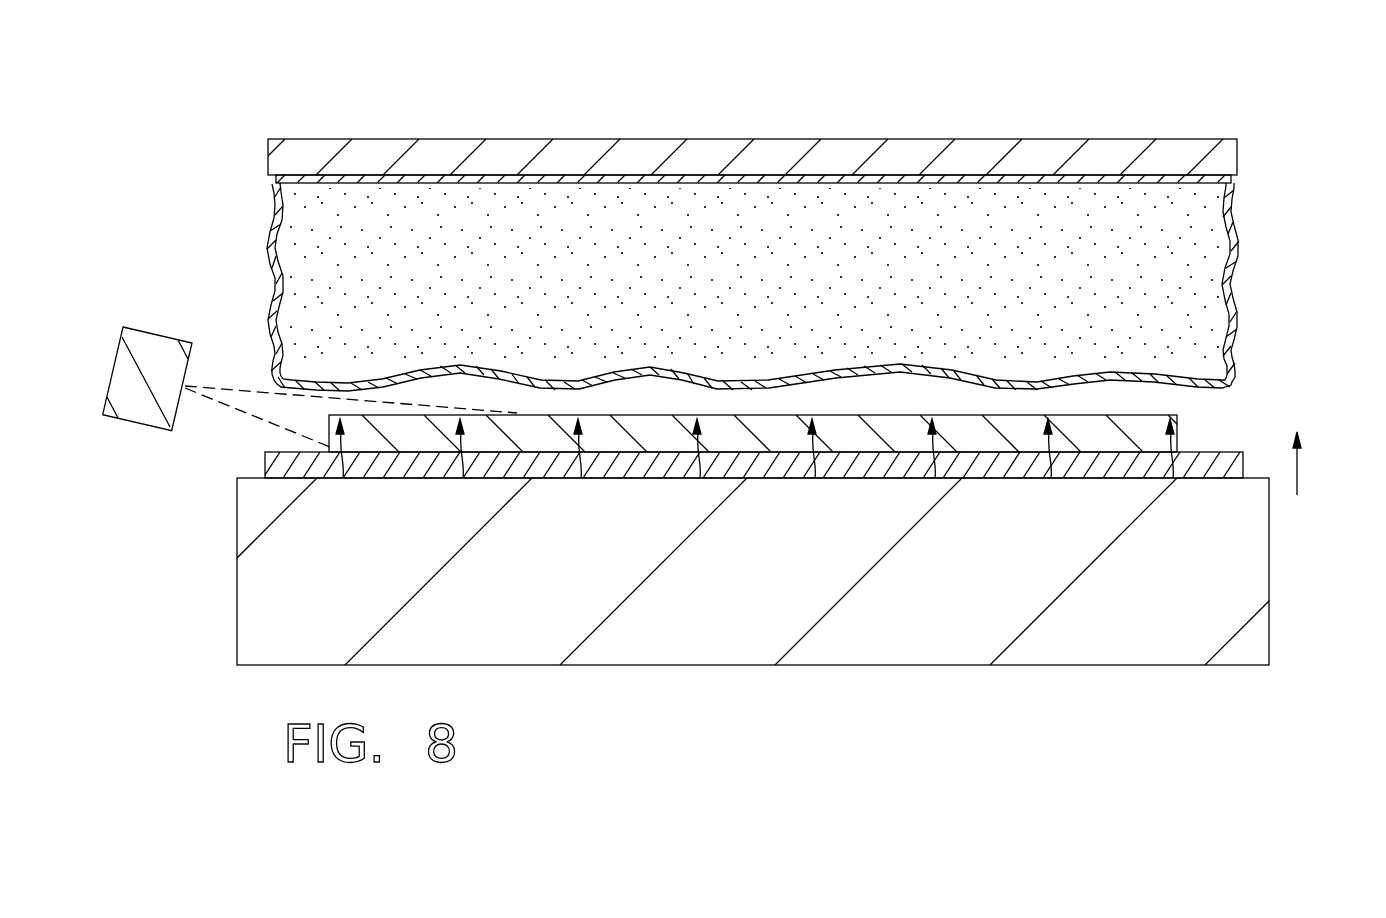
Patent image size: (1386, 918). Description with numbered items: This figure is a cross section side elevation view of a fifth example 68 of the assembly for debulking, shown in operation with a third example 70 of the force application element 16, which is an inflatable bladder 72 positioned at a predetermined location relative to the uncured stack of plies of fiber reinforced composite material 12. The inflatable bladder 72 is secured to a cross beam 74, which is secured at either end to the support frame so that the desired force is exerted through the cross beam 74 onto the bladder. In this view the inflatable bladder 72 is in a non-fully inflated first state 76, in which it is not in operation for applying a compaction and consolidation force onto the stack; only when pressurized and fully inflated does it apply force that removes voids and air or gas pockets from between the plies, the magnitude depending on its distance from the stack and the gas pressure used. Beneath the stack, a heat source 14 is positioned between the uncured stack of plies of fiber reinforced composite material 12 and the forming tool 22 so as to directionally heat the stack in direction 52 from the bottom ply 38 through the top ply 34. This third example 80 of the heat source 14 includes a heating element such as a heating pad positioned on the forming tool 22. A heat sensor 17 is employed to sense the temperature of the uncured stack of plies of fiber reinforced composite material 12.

The fifth example of assembly for debulking 68 is at (1157, 100).
The cross beam 74 is at (762, 152).
The force application element 16 is at (243, 217).
The third example of force application element 70 is at (1247, 303).
The inflatable bladder 72 is at (1230, 265).
The first state 76 is at (1252, 342).
The top ply 34 is at (838, 415).
The uncured stack of plies of fiber reinforced composite material 12 is at (1140, 430).
The heat source 14 is at (904, 480).
The bottom ply 38 is at (997, 455).
The forming tool 22 is at (1210, 583).
The third example of heat source 80 is at (471, 480).
The direction 52 is at (1297, 478).
The heat sensor 17 is at (117, 350).